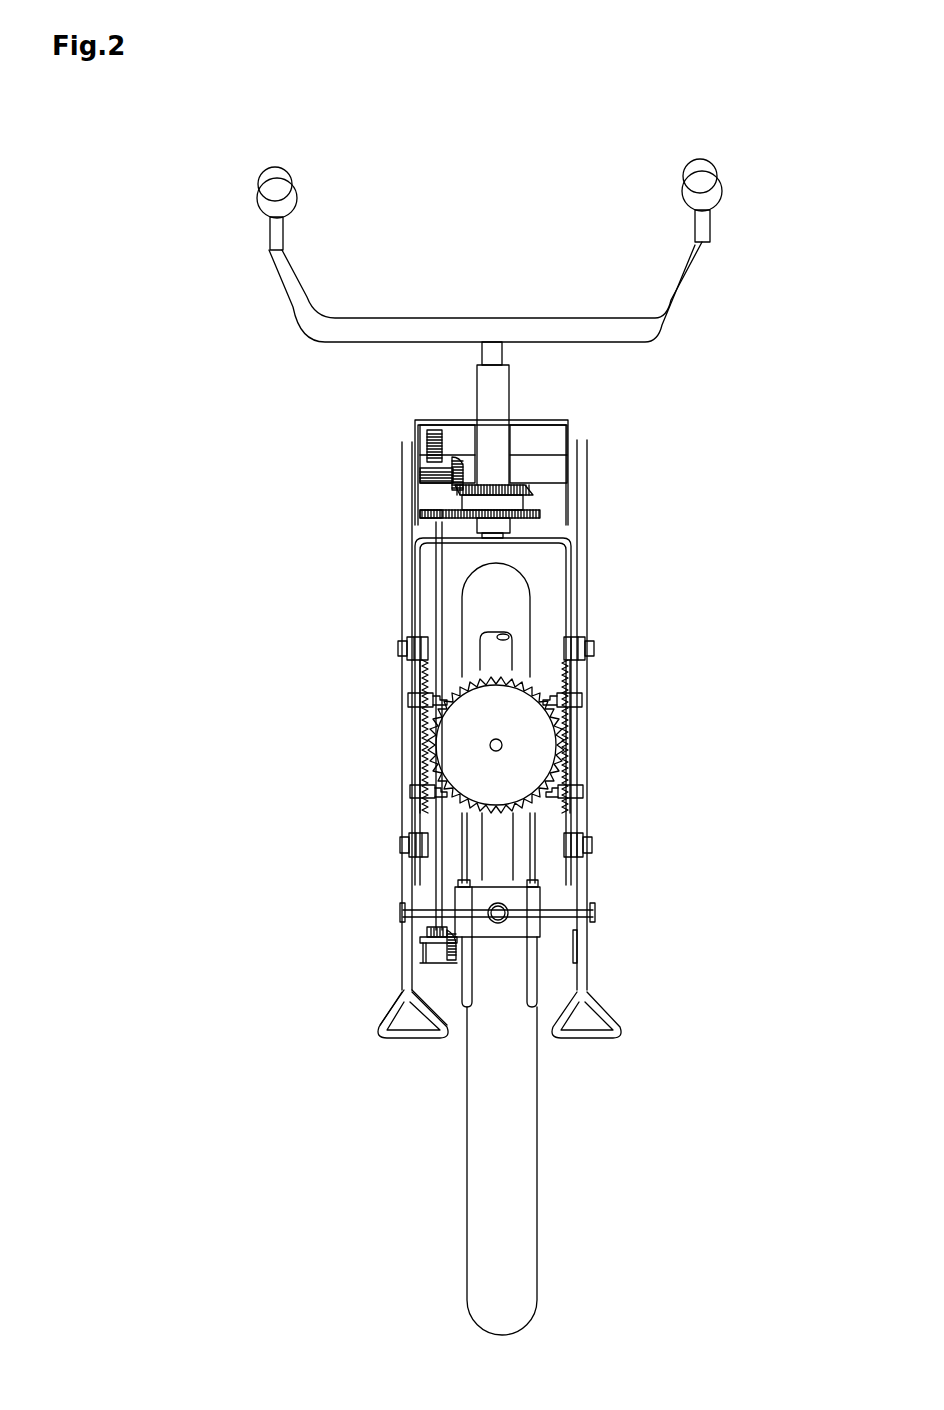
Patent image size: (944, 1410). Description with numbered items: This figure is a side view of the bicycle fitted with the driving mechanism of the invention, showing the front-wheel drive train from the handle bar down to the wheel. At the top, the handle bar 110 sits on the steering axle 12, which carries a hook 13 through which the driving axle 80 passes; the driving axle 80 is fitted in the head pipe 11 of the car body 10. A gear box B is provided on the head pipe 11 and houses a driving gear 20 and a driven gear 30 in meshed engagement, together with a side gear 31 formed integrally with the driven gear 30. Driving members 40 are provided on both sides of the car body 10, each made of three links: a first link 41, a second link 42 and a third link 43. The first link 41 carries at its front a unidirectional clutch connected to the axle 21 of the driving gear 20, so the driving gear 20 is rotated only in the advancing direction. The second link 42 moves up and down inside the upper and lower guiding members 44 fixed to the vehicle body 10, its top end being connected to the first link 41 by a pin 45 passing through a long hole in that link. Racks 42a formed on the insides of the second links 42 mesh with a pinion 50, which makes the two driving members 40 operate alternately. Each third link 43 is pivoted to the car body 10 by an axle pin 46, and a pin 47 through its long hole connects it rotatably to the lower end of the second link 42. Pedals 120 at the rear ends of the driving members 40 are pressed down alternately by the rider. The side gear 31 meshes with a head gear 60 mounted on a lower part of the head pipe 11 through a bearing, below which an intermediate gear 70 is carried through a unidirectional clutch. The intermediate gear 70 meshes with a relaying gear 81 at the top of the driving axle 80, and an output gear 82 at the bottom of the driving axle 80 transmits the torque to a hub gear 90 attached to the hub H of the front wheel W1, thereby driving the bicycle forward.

The car body 10 is at (505, 655).
The head pipe 11 is at (485, 390).
The steering axle 12 is at (488, 352).
The hook 13 is at (418, 575).
The driving gear 20 is at (432, 430).
The axle 21 is at (553, 453).
The driven gear 30 is at (420, 472).
The side gear 31 is at (458, 492).
The driving member 40 is at (417, 673).
The first link 41 is at (405, 450).
The second link 42 is at (420, 817).
The rack 42a is at (420, 773).
The third link 43 is at (410, 882).
The guiding member 44 is at (417, 703).
The pin 45 is at (400, 648).
The axle pin 46 is at (593, 913).
The pin 47 is at (593, 847).
The pinion 50 is at (540, 760).
The head gear 60 is at (530, 485).
The intermediate gear 70 is at (540, 515).
The driving axle 80 is at (438, 615).
The relaying gear 81 is at (420, 517).
The output gear 82 is at (413, 933).
The hub gear 90 is at (458, 968).
The handle bar 110 is at (690, 270).
The pedal 120 is at (407, 1036).
The gear box B is at (547, 420).
The hub H is at (460, 985).
The front wheel W1 is at (530, 1290).